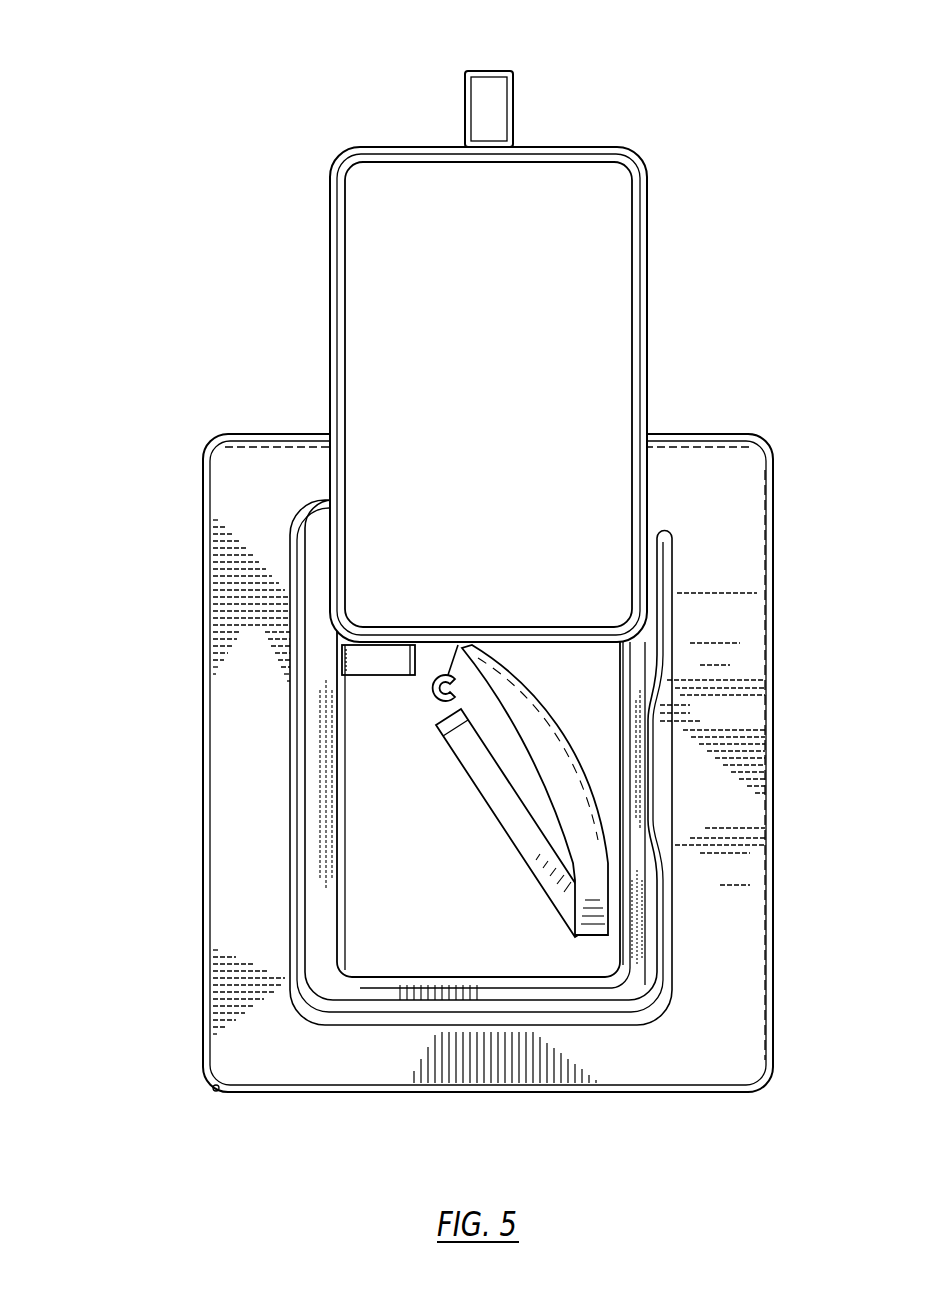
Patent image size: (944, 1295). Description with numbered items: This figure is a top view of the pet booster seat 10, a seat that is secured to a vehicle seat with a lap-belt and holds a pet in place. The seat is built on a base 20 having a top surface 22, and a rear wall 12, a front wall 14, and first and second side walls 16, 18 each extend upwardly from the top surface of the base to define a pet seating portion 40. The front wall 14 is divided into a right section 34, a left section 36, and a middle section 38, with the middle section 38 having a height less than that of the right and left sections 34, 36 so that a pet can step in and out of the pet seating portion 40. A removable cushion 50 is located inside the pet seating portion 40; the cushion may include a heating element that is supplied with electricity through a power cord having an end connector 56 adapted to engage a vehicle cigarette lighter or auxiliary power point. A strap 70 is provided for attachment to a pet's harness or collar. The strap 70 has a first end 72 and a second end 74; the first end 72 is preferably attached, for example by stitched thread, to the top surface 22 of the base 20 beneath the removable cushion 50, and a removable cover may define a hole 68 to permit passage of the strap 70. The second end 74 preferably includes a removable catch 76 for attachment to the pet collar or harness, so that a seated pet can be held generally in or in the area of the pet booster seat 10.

The pet booster seat 10 is at (143, 252).
The rear wall 12 is at (203, 783).
The front wall 14 is at (773, 655).
The first side wall 16 is at (578, 1092).
The second side wall 18 is at (725, 432).
The base 20 is at (380, 920).
The top surface 22 is at (380, 945).
The right section 34 is at (773, 545).
The left section 36 is at (773, 960).
The middle section 38 is at (773, 760).
The pet seating portion 40 is at (120, 567).
The removable cushion 50 is at (640, 165).
The end connector 56 is at (513, 97).
The hole 68 is at (350, 640).
The strap 70 is at (600, 940).
The first end 72 is at (345, 660).
The second end 74 is at (440, 730).
The removable catch 76 is at (430, 688).